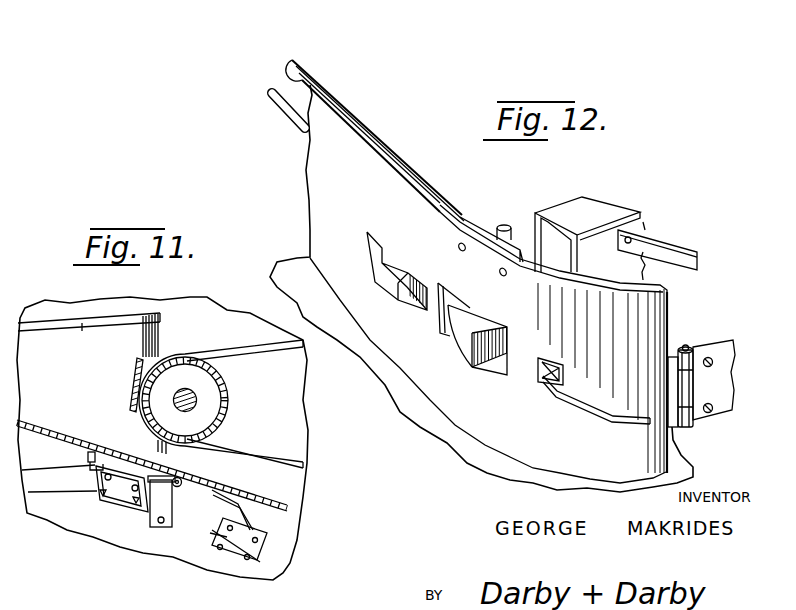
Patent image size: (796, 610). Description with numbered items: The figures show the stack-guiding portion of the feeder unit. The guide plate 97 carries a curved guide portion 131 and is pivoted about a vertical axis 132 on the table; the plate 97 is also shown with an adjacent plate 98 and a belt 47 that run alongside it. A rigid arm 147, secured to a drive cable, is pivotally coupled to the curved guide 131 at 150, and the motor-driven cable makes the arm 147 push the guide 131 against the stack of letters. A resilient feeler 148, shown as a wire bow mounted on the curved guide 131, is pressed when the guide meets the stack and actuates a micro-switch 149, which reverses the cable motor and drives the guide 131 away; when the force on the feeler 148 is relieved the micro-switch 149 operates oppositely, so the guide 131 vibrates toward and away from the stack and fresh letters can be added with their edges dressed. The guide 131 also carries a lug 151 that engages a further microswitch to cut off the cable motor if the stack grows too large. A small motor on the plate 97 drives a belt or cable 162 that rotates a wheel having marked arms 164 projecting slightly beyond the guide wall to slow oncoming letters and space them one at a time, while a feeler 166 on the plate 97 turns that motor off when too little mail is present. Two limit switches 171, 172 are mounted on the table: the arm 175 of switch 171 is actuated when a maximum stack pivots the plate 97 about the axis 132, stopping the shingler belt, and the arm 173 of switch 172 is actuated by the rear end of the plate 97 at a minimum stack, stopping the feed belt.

In FIG. 11, the belt 47 is at (253, 456).
In FIG. 11, the guide plate 97 is at (40, 428).
In FIG. 12, the guide plate 97 is at (338, 127).
In FIG. 11, the plate 98 is at (160, 331).
In FIG. 12, the curved guide portion 131 is at (558, 480).
In FIG. 11, the vertical axis 132 is at (177, 487).
In FIG. 12, the rigid arm 147 is at (720, 410).
In FIG. 12, the resilient feeler 148 is at (605, 418).
In FIG. 12, the micro-switch 149 is at (600, 208).
In FIG. 12, the pivotal coupling 150 is at (688, 340).
In FIG. 12, the lug 151 is at (672, 245).
In FIG. 12, the belt or cable 162 is at (290, 100).
In FIG. 12, the marked arms 164 is at (480, 365).
In FIG. 12, the feeler 166 is at (388, 287).
In FIG. 11, the limit switch 171 is at (117, 497).
In FIG. 11, the limit switch 172 is at (263, 532).
In FIG. 11, the arm of switch 172 173 is at (216, 491).
In FIG. 11, the arm of switch 171 175 is at (86, 456).